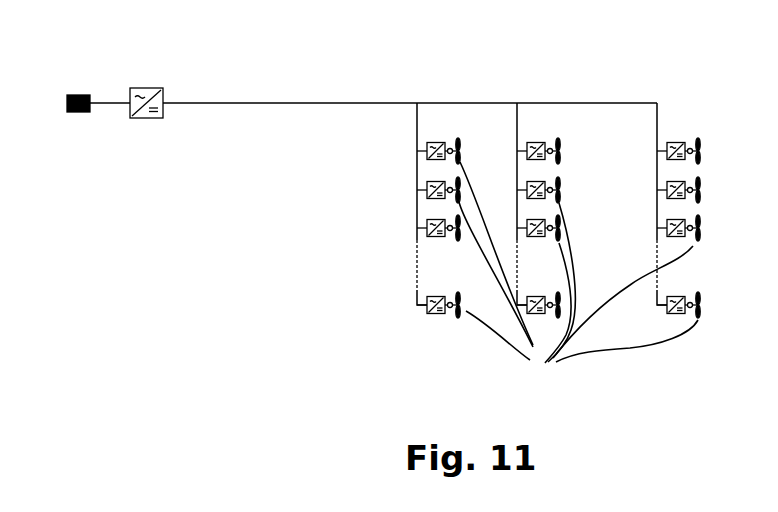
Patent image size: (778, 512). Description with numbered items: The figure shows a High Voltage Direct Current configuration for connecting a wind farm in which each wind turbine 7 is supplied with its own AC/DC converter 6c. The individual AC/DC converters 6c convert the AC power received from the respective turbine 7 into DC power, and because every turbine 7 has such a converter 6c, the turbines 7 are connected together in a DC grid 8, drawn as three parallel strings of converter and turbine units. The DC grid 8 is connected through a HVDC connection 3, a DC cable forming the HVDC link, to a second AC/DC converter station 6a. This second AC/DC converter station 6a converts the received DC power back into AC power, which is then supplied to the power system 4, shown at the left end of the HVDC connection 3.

The HVDC connection 3 is at (273, 98).
The power system 4 is at (82, 133).
The second AC/DC converter station 6a is at (155, 136).
The AC/DC converter 6c is at (657, 149).
The wind turbine 7 is at (578, 275).
The DC grid 8 is at (337, 267).